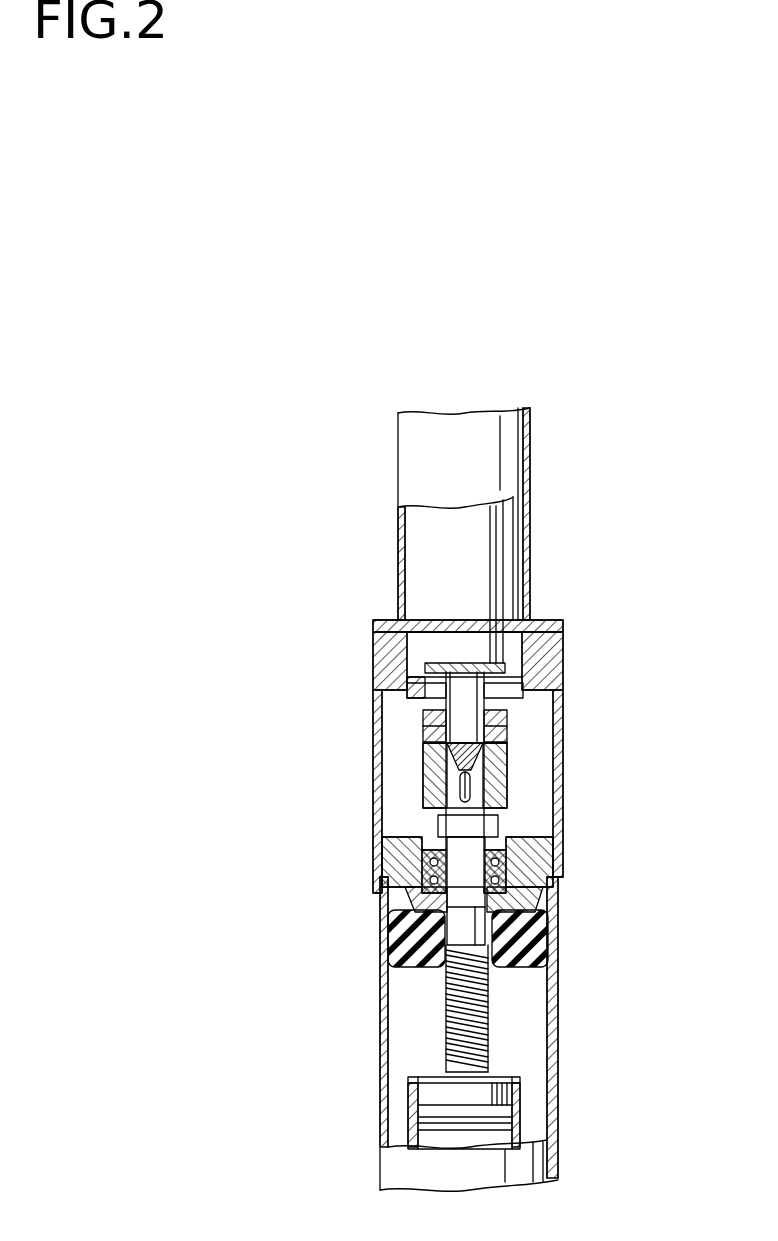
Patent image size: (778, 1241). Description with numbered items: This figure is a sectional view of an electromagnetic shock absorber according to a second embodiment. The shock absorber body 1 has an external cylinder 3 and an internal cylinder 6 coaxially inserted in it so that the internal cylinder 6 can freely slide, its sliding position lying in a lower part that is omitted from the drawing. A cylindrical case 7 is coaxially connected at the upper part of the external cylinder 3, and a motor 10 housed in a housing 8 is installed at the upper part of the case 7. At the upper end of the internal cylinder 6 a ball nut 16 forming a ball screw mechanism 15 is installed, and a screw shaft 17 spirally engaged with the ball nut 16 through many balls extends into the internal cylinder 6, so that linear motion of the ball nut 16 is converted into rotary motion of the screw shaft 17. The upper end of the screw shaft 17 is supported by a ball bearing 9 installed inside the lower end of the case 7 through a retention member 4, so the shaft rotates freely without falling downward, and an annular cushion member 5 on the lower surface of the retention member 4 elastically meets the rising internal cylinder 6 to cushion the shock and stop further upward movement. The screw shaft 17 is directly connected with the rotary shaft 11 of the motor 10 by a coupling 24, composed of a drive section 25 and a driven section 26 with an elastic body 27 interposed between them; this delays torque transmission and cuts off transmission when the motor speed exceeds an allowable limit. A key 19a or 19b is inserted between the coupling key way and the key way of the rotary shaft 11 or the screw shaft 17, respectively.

The shock absorber body 1 is at (565, 1157).
The external cylinder 3 is at (415, 1106).
The retention member 4 is at (522, 900).
The annular cushion member 5 is at (420, 968).
The internal cylinder 6 is at (418, 1100).
The cylindrical case 7 is at (565, 760).
The housing 8 is at (530, 452).
The ball bearing 9 is at (506, 863).
The motor 10 is at (500, 553).
The rotary shaft 11 is at (484, 698).
The ball screw mechanism 15 is at (428, 1064).
The ball nut 16 is at (495, 1088).
The screw shaft 17 is at (490, 1012).
The key 19a is at (436, 707).
The key 19b is at (447, 818).
The coupling 24 is at (420, 755).
The drive section 25 is at (458, 786).
The driven section 26 is at (507, 726).
The elastic body 27 is at (485, 765).